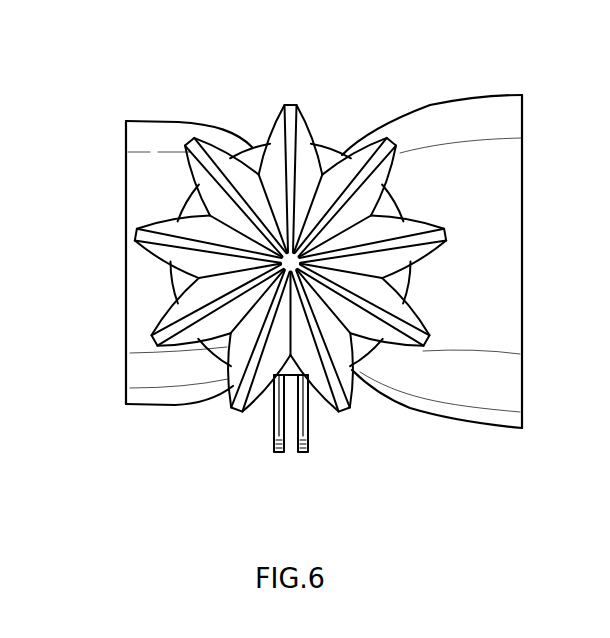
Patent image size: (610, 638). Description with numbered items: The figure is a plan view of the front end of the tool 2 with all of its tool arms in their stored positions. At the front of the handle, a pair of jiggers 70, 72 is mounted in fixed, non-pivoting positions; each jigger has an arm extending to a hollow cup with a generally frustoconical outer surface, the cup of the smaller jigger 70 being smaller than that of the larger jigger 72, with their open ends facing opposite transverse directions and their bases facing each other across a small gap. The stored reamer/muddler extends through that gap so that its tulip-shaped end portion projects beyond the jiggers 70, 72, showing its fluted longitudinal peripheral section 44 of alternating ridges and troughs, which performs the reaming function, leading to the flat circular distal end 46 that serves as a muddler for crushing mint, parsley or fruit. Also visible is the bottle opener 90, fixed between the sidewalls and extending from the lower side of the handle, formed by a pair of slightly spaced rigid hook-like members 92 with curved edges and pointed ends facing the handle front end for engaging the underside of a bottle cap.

The ornament assembly 2 is at (390, 54).
The longitudinal peripheral section 44 is at (168, 248).
The circular distal end 46 is at (260, 148).
The jigger 70 is at (162, 370).
The jigger 72 is at (502, 313).
The bottle opener 90 is at (291, 444).
The hook-like members 92 is at (274, 420).